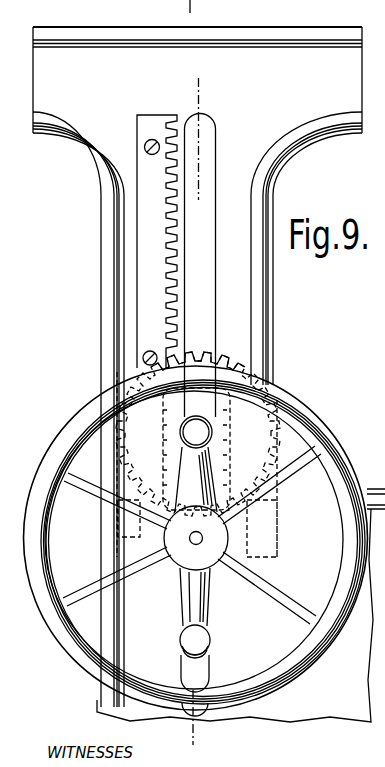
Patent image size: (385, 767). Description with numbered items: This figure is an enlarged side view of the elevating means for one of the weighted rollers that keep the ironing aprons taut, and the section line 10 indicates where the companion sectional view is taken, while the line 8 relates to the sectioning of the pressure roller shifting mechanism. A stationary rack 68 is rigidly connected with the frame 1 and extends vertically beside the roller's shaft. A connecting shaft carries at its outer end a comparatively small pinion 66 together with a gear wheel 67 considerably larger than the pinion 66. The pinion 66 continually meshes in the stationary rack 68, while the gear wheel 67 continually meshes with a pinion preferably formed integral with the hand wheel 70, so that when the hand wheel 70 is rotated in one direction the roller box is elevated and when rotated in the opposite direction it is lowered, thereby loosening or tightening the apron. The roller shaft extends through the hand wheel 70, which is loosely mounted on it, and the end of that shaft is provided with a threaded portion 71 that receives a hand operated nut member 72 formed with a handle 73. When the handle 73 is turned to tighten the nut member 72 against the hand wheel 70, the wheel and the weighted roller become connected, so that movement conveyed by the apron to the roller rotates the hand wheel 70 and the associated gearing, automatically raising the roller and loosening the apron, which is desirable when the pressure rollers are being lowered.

The frame 1 is at (105, 132).
The line 8— 8 is at (189, 15).
The line 10— 10 is at (198, 416).
The pinion 66 is at (222, 422).
The gear wheel 67 is at (232, 358).
The stationary rack 68 is at (140, 280).
The hand wheel 70 is at (317, 418).
The threaded portion 71 is at (205, 538).
The nut member 72 is at (193, 612).
The handle 73 is at (198, 640).